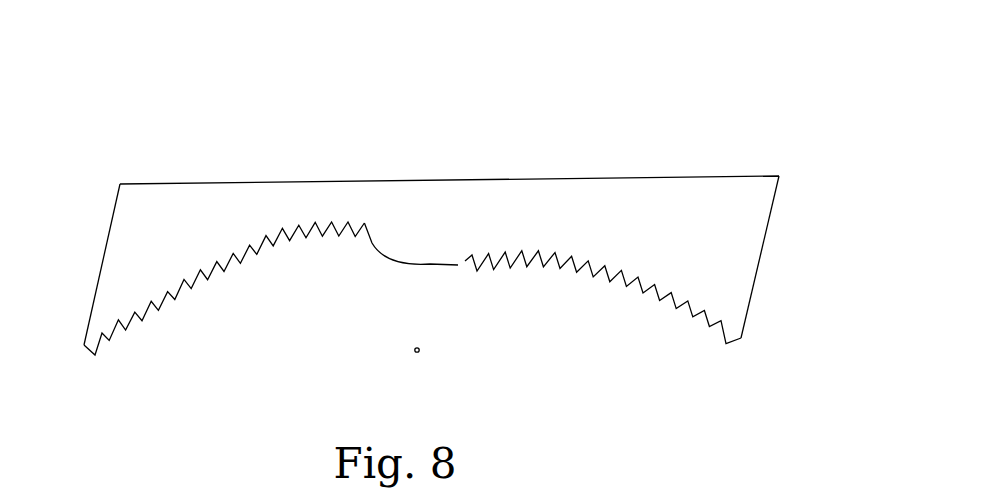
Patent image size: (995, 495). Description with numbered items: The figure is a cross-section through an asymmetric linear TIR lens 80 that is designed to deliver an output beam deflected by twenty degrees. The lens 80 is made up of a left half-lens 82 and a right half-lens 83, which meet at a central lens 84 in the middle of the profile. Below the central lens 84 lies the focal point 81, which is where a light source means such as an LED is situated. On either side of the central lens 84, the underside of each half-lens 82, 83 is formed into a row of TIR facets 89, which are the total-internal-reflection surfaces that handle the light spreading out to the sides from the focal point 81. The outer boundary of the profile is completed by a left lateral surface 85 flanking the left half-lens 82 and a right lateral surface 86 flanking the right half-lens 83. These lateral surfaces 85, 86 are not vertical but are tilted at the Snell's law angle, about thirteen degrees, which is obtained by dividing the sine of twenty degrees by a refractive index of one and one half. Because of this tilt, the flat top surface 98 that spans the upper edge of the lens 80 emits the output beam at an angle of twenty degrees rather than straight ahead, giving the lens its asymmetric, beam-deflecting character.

The asymmetric linear TIR lens 80 is at (216, 120).
The focal point 81 is at (418, 362).
The left half-lens 82 is at (224, 288).
The right half-lens 83 is at (603, 280).
The central lens 84 is at (401, 265).
The left lateral surface 85 is at (100, 268).
The right lateral surface 86 is at (762, 283).
The TIR facets 89 is at (412, 300).
The flat top surface 98 is at (558, 170).